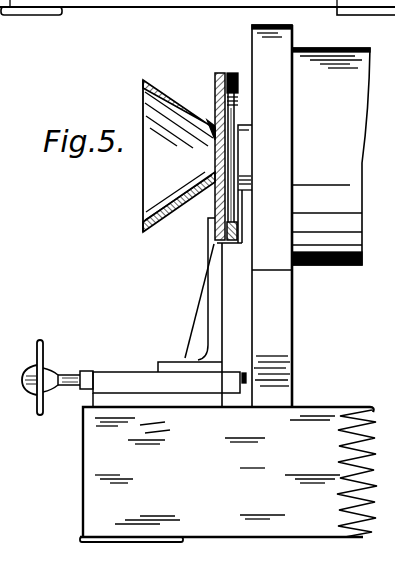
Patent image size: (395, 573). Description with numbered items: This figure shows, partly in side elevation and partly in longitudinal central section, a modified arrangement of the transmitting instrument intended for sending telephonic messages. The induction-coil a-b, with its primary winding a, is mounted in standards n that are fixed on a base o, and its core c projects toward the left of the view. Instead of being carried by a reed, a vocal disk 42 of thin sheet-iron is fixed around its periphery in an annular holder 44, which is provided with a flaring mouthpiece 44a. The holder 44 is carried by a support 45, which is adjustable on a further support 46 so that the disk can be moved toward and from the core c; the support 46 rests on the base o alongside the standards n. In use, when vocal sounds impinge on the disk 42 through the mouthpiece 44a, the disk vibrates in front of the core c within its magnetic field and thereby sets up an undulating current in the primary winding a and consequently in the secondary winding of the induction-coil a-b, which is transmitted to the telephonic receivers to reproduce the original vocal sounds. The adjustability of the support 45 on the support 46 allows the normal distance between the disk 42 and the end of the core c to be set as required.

The vocal disk 42 is at (228, 158).
The annular holder 44 is at (222, 73).
The mouthpiece 44a is at (179, 156).
The support 45 is at (210, 320).
The support 46 is at (134, 377).
The standards n is at (272, 216).
The core c is at (245, 184).
The induction-coil a-b is at (331, 156).
The base o is at (228, 474).
The primary winding a is at (382, 498).